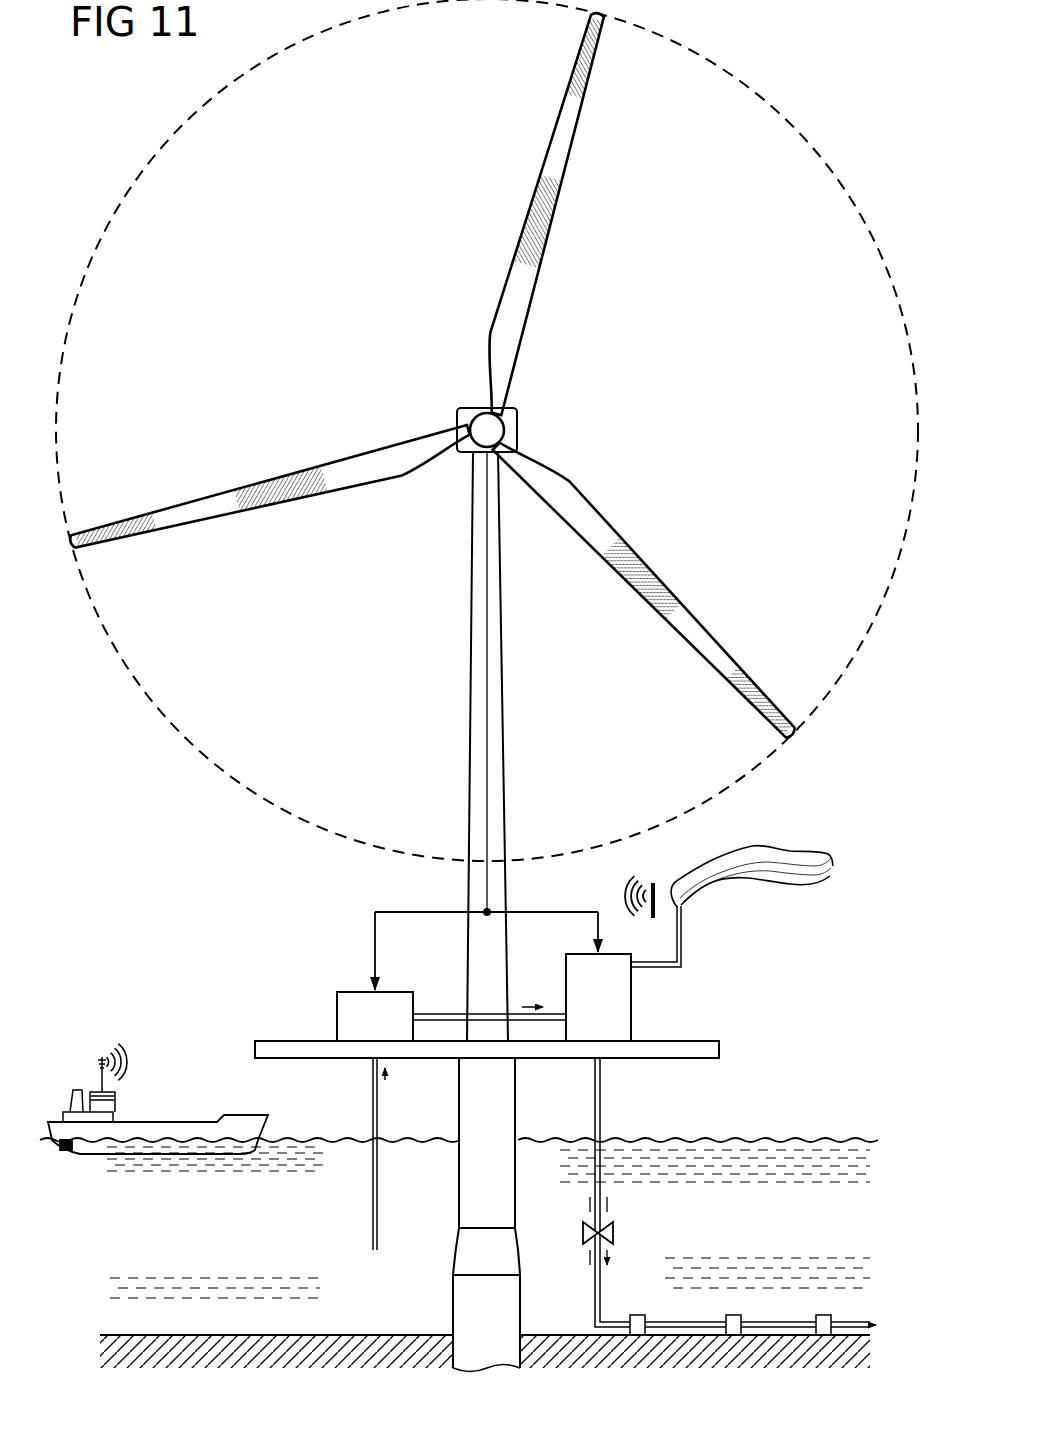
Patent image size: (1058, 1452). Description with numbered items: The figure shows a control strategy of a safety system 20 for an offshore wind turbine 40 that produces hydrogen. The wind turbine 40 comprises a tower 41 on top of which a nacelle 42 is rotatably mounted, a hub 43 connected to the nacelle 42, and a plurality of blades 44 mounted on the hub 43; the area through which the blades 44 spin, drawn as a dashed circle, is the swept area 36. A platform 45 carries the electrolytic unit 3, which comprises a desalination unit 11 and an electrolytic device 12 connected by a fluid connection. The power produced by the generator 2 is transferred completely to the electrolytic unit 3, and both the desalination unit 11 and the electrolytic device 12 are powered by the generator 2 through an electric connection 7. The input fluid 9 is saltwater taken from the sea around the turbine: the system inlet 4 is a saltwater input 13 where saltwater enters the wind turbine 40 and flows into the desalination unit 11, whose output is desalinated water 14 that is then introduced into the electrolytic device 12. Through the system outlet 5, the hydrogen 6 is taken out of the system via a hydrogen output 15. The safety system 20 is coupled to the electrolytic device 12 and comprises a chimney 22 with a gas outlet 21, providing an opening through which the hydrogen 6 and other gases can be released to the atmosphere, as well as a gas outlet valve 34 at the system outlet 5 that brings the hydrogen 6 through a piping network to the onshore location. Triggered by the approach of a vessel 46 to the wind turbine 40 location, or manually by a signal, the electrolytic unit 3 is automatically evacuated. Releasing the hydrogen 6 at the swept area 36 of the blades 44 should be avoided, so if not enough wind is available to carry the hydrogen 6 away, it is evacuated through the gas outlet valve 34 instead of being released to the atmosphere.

The generator 2 is at (487, 520).
The electrolytic unit 3 is at (576, 896).
The system inlet 4 is at (326, 1154).
The system outlet 5 is at (735, 1196).
The hydrogen 6 is at (802, 853).
The electric connection 7 is at (487, 742).
The input fluid 9 is at (309, 1244).
The desalination unit 11 is at (349, 992).
The electrolytic device 12 is at (566, 975).
The saltwater input 13 is at (372, 1078).
The desalinated water 14 is at (440, 1013).
The hydrogen output 15 is at (602, 1076).
The safety system 20 is at (731, 851).
The gas outlet 21 is at (716, 932).
The chimney 22 is at (682, 922).
The gas outlet valve 34 is at (615, 1237).
The swept area 36 is at (803, 140).
The wind turbine 40 is at (438, 375).
The tower 41 is at (472, 640).
The nacelle 42 is at (517, 410).
The hub 43 is at (492, 429).
The blades 44 is at (552, 128).
The platform 45 is at (719, 1048).
The vessel 46 is at (190, 1122).